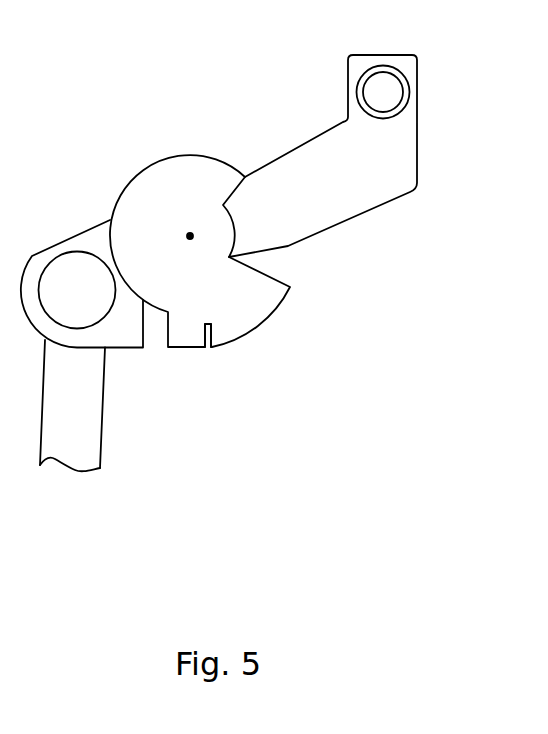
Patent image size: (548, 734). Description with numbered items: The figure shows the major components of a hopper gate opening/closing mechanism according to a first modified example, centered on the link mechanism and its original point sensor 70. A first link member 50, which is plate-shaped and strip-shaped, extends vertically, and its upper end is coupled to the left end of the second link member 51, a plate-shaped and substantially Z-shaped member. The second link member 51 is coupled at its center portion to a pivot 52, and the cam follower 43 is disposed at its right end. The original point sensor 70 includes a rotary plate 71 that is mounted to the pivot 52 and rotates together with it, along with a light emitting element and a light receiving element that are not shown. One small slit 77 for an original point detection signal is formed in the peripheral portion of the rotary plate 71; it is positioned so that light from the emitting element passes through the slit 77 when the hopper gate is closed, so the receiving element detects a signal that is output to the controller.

The cam follower 43 is at (402, 73).
The first link member 50 is at (100, 424).
The second link member 51 is at (350, 220).
The pivot 52 is at (190, 236).
The original point sensor 70 is at (308, 222).
The rotary plate 71 is at (152, 162).
The slit 77 is at (206, 347).